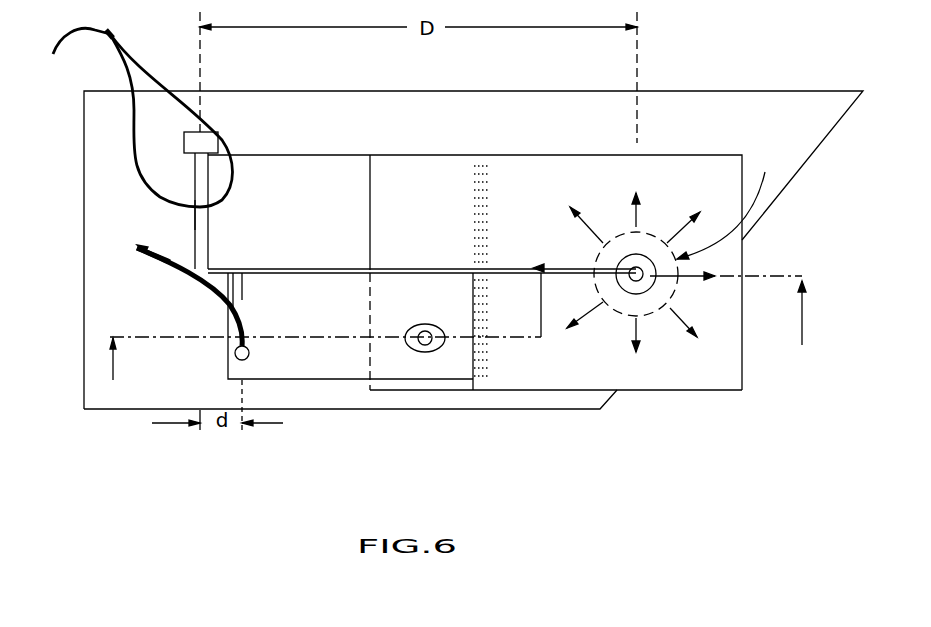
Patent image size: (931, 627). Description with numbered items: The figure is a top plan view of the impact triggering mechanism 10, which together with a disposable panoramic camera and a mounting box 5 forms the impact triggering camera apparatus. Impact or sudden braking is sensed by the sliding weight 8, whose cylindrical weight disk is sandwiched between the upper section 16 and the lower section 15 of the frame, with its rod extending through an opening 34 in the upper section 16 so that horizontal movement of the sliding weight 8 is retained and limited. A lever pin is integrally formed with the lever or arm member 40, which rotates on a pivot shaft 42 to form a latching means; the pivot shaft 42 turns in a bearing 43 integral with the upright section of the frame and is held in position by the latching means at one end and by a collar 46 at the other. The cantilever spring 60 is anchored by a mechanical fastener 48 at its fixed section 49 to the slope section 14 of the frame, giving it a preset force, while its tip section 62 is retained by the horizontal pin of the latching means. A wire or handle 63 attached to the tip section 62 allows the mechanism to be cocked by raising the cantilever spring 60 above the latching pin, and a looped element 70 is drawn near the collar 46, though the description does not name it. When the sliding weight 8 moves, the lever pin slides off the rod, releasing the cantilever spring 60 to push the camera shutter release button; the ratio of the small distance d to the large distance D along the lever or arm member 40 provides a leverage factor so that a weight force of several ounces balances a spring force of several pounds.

The mounting box 5 is at (518, 412).
The sliding weight 8 is at (726, 202).
The impact triggering mechanism 10 is at (747, 382).
The slope section 14 is at (400, 392).
The lower section 15 is at (335, 182).
The upper section 16 is at (658, 176).
The opening 34 is at (617, 303).
The lever or arm member 40 is at (340, 265).
The pivot shaft 42 is at (208, 221).
The bearing 43 is at (193, 214).
The collar 46 is at (193, 143).
The mechanical fastener 48 is at (425, 342).
The fixed section 49 is at (430, 298).
The cantilever spring 60 is at (338, 384).
The tip section 62 is at (226, 326).
The wire or handle 63 is at (163, 263).
The lanyard loop 70 is at (137, 117).